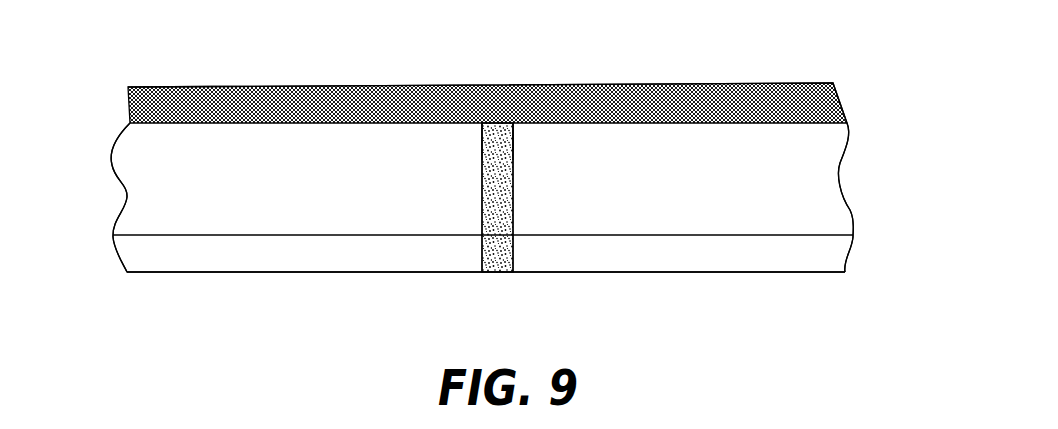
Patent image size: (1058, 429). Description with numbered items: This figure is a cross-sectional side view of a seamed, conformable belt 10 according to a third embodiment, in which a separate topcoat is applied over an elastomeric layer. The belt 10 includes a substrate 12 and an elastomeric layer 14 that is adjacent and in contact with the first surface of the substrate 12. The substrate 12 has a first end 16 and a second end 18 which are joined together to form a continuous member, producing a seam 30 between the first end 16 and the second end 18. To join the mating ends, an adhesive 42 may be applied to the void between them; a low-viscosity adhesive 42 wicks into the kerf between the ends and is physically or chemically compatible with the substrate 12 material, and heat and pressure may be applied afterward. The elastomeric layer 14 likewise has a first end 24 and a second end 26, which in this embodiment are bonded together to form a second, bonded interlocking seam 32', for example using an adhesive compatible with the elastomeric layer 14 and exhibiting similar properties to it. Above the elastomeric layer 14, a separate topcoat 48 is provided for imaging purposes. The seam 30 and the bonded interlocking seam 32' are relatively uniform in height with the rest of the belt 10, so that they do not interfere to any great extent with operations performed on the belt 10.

The belt 10 is at (107, 122).
The substrate 12 is at (712, 260).
The elastomeric layer 14 is at (820, 183).
The first end 16 is at (482, 253).
The second end 18 is at (513, 253).
The first end 24 is at (482, 157).
The second end 26 is at (513, 157).
The seam 30 is at (492, 276).
The bonded interlocking seam 32' is at (553, 99).
The adhesive 42 is at (505, 195).
The topcoat 48 is at (822, 105).